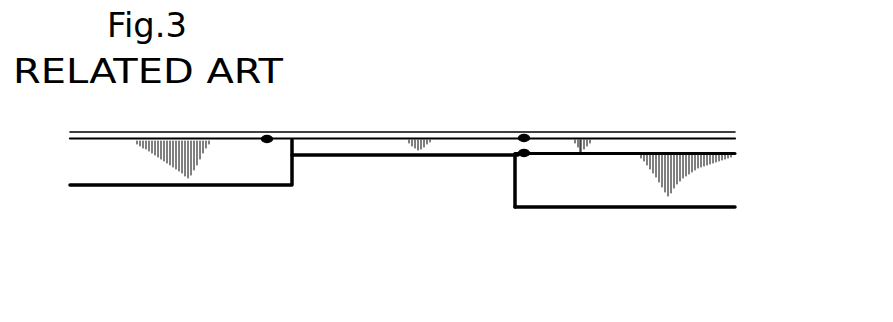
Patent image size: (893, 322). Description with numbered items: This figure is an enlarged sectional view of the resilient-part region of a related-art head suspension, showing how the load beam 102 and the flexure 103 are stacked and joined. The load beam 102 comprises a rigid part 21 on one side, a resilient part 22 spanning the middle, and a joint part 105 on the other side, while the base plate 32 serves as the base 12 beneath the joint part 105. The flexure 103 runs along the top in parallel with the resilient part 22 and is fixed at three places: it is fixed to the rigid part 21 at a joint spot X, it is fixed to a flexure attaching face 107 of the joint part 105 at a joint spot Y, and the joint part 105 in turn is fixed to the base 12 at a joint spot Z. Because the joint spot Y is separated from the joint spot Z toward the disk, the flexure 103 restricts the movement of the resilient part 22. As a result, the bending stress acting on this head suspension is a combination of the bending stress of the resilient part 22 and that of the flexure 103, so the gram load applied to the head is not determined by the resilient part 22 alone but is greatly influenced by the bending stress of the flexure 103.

The load beam 102 is at (333, 127).
The flexure 103 is at (405, 132).
The joint part 105 is at (662, 147).
The flexure attaching face 107 is at (595, 140).
The rigid part 21 is at (230, 158).
The resilient part 22 is at (392, 147).
The base plate 32 is at (628, 173).
The base 12 is at (675, 208).
The joint spot X is at (267, 138).
The joint spot Y is at (524, 138).
The joint spot Z is at (524, 154).